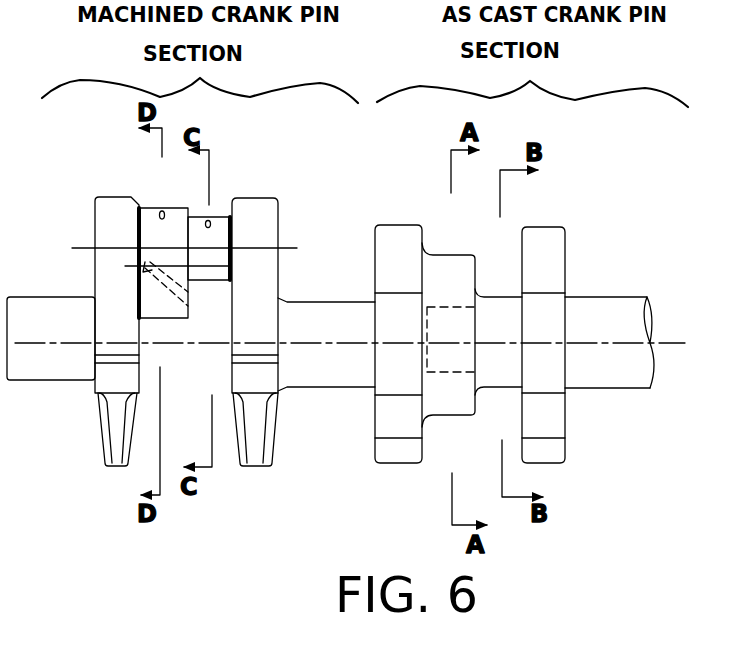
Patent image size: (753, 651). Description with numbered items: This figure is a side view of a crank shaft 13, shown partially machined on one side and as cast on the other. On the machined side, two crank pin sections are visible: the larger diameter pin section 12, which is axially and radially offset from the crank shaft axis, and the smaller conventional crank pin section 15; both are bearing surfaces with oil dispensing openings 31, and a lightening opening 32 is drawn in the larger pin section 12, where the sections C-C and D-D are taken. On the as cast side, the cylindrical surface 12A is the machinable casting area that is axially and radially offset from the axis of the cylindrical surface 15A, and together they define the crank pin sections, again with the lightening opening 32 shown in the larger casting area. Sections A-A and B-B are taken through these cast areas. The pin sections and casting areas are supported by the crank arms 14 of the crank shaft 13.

The larger diameter pin section 12 is at (150, 205).
The crank shaft 13 is at (68, 384).
The crank arms 14 is at (283, 419).
The conventional crank pin section 15 is at (219, 211).
The oil dispensing openings 31 is at (162, 205).
The lightening opening 32 is at (190, 305).
The cylindrical surface 12A is at (456, 422).
The cylindrical surface 15A is at (490, 292).